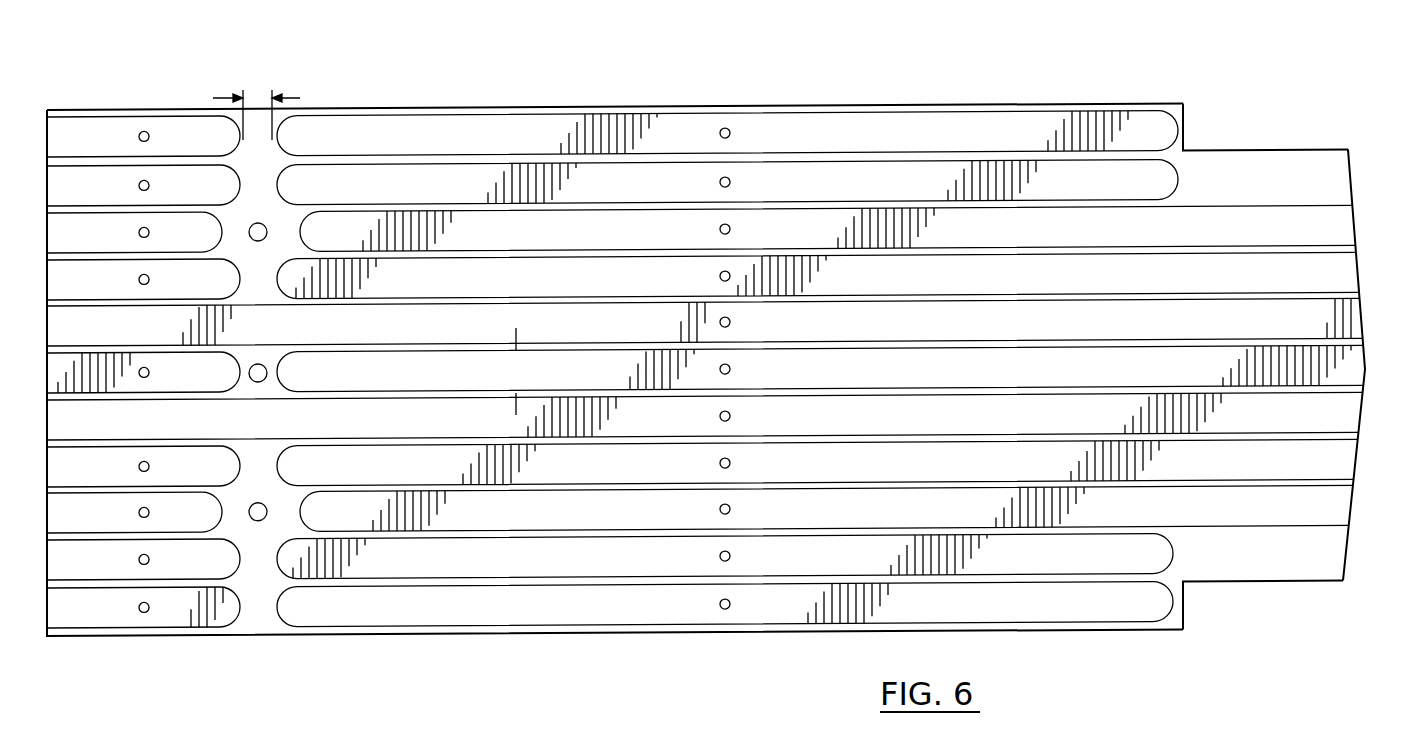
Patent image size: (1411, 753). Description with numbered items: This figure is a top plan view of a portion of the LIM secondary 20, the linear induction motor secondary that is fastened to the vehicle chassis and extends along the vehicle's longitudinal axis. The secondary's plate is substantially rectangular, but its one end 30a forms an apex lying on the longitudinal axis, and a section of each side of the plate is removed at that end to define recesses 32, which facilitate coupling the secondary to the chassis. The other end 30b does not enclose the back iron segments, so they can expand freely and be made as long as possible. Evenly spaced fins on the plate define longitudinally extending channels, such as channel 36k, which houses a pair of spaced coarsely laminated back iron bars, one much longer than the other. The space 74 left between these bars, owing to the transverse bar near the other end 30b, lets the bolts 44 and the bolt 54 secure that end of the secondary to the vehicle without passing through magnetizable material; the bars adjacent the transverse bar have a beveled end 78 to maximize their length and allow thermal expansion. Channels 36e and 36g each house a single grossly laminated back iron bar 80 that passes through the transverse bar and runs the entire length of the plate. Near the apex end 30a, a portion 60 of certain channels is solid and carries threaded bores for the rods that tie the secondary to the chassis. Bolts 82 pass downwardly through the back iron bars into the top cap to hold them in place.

The LIM secondary 20 is at (548, 95).
The one end of the plate 30a is at (1358, 172).
The other end of the plate 30b is at (78, 650).
The recesses 32 is at (1256, 138).
The channel 36k is at (1145, 128).
The channel 36g is at (1352, 305).
The channel 36e is at (1335, 410).
The bolts 44 is at (258, 222).
The bolt 54 is at (263, 365).
The solid portion of channel 60 is at (1310, 160).
The space between the bars 74 is at (258, 100).
The beveled end 78 is at (282, 610).
The back iron bar 80 is at (515, 371).
The bolts 82 is at (150, 228).